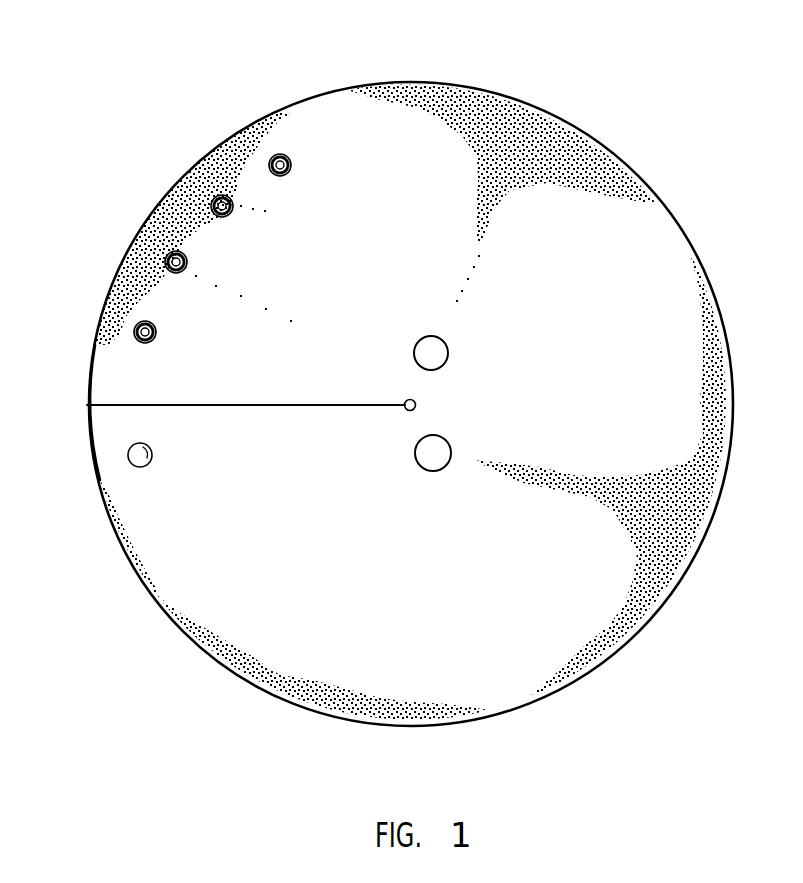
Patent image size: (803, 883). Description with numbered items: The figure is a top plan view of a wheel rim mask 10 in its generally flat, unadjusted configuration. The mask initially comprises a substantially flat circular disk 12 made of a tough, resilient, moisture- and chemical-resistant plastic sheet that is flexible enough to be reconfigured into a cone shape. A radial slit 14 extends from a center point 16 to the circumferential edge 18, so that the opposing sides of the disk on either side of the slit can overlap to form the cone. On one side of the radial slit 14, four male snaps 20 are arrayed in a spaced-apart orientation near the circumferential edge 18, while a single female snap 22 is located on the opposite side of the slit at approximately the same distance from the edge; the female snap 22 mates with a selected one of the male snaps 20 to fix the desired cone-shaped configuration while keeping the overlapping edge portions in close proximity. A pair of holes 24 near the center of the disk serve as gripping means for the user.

The wheel rim mask 10 is at (180, 88).
The circular disk 12 is at (640, 230).
The radial slit 14 is at (147, 405).
The center point 16 is at (407, 399).
The circumferential edge 18 is at (84, 418).
The male snaps 20 is at (268, 166).
The female snap 22 is at (134, 463).
The holes 24 is at (451, 445).